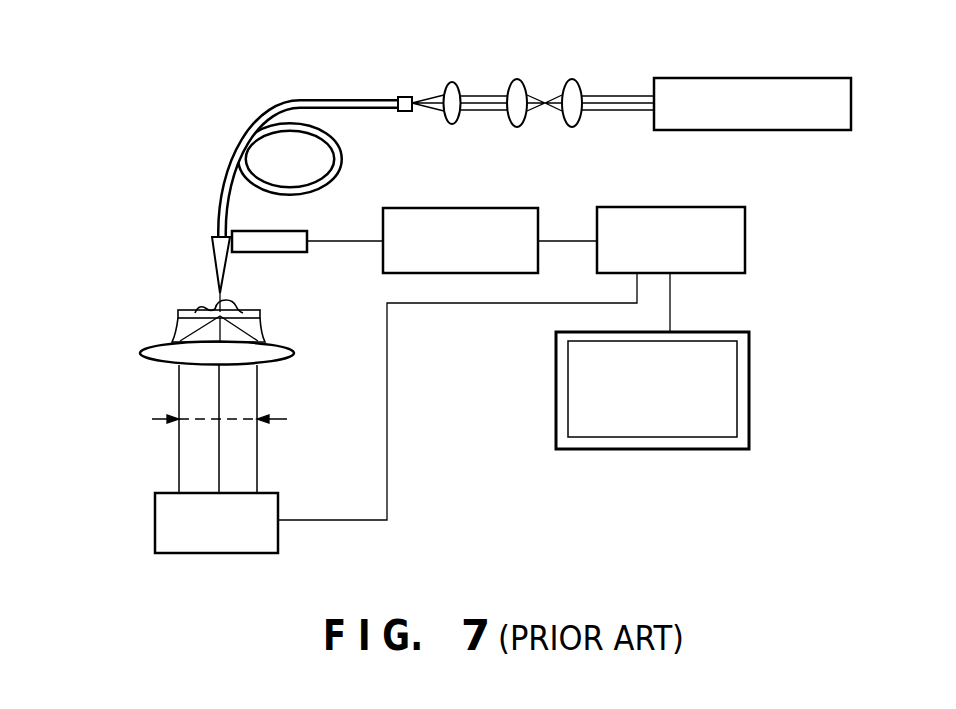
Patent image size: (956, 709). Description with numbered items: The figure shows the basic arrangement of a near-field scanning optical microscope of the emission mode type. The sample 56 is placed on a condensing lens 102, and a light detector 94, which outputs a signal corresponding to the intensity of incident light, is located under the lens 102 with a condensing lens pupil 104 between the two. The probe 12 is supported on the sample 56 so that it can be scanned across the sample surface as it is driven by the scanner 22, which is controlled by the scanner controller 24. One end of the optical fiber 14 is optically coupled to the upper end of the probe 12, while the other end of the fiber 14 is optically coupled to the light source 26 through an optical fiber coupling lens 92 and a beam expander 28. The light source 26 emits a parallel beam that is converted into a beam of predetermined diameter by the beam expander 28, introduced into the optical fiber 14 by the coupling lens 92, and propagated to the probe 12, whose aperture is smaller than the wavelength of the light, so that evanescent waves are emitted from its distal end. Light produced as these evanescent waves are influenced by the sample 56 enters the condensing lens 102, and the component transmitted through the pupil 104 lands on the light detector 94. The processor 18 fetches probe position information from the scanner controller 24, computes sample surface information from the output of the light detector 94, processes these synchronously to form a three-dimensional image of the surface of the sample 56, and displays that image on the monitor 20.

The probe 12 is at (230, 272).
The optical fiber 14 is at (299, 98).
The processor 18 is at (670, 207).
The monitor 20 is at (750, 387).
The scanner 22 is at (307, 231).
The scanner controller 24 is at (466, 208).
The light source 26 is at (755, 78).
The beam expander 28 is at (502, 74).
The sample 56 is at (205, 307).
The optical fiber coupling lens 92 is at (405, 74).
The light detector 94 is at (155, 525).
The condensing lens 102 is at (135, 303).
The condensing lens pupil 104 is at (152, 419).